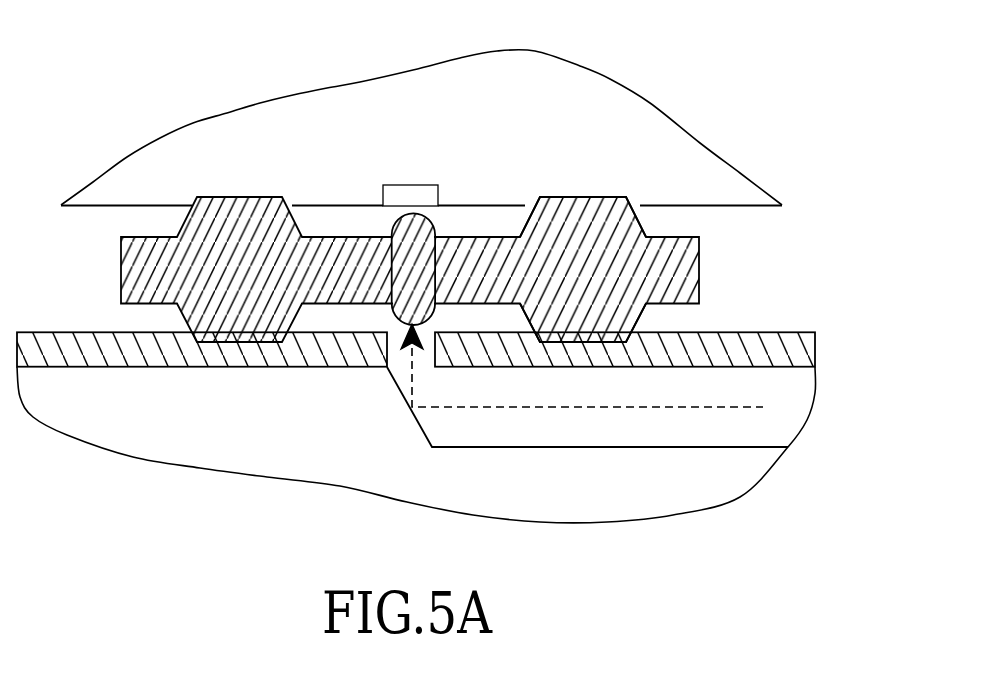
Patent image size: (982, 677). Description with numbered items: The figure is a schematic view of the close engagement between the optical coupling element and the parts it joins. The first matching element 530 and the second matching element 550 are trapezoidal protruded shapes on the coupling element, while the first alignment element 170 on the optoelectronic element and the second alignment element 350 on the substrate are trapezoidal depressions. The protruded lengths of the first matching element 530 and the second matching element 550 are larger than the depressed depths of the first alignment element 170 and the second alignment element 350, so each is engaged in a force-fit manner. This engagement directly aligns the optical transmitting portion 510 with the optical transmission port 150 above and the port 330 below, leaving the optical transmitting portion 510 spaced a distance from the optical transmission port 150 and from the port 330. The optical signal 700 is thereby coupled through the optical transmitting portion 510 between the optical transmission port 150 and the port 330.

The optical transmission port 150 is at (432, 206).
The first alignment element 170 is at (592, 197).
The first matching element 530 is at (638, 222).
The second matching element 550 is at (640, 313).
The optical transmitting portion 510 is at (397, 316).
The second alignment element 350 is at (593, 360).
The port 330 is at (398, 350).
The optical signal 700 is at (688, 409).